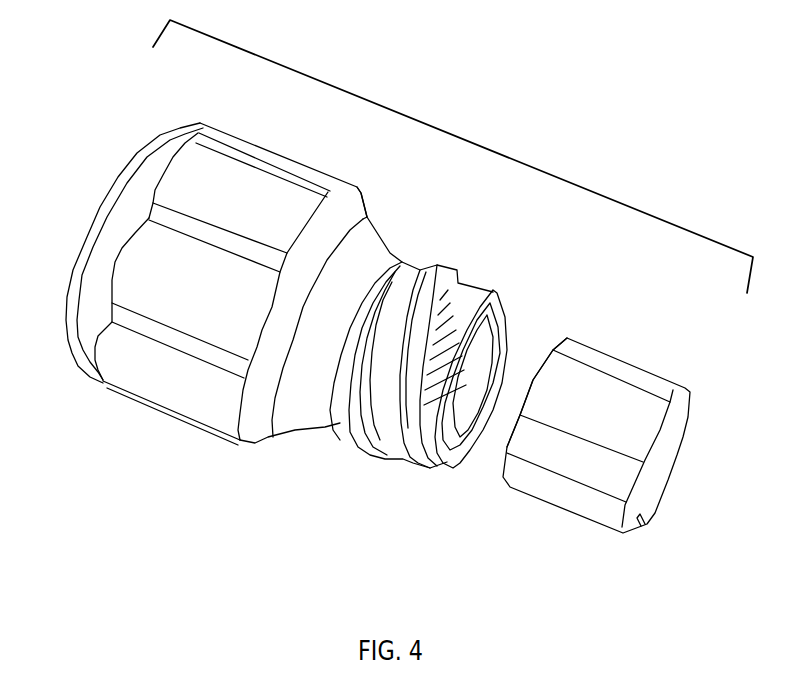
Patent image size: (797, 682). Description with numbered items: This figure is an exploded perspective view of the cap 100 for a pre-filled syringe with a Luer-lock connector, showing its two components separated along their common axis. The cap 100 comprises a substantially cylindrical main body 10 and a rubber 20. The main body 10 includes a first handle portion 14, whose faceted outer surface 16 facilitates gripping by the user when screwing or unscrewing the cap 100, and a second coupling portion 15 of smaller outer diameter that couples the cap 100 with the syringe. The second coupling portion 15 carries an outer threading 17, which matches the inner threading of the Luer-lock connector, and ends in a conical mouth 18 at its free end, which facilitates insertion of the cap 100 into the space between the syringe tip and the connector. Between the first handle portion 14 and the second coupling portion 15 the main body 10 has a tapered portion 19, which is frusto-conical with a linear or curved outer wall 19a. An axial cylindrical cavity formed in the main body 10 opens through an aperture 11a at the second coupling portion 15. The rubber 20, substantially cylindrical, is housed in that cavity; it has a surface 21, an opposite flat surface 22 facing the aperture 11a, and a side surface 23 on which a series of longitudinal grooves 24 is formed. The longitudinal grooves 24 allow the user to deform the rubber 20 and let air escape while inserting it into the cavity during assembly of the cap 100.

The cap 100 is at (453, 156).
The main body 10 is at (285, 395).
The aperture 11a is at (469, 439).
The first handle portion 14 is at (213, 326).
The second coupling portion 15 is at (382, 416).
The faceted outer surface 16 is at (107, 211).
The outer threading 17 is at (460, 332).
The conical mouth 18 is at (499, 354).
The tapered portion 19 is at (430, 226).
The outer wall 19a is at (308, 176).
The rubber 20 is at (625, 460).
The surface 21 is at (563, 369).
The surface 22 is at (609, 513).
The side surface 23 is at (640, 464).
The longitudinal grooves 24 is at (631, 368).